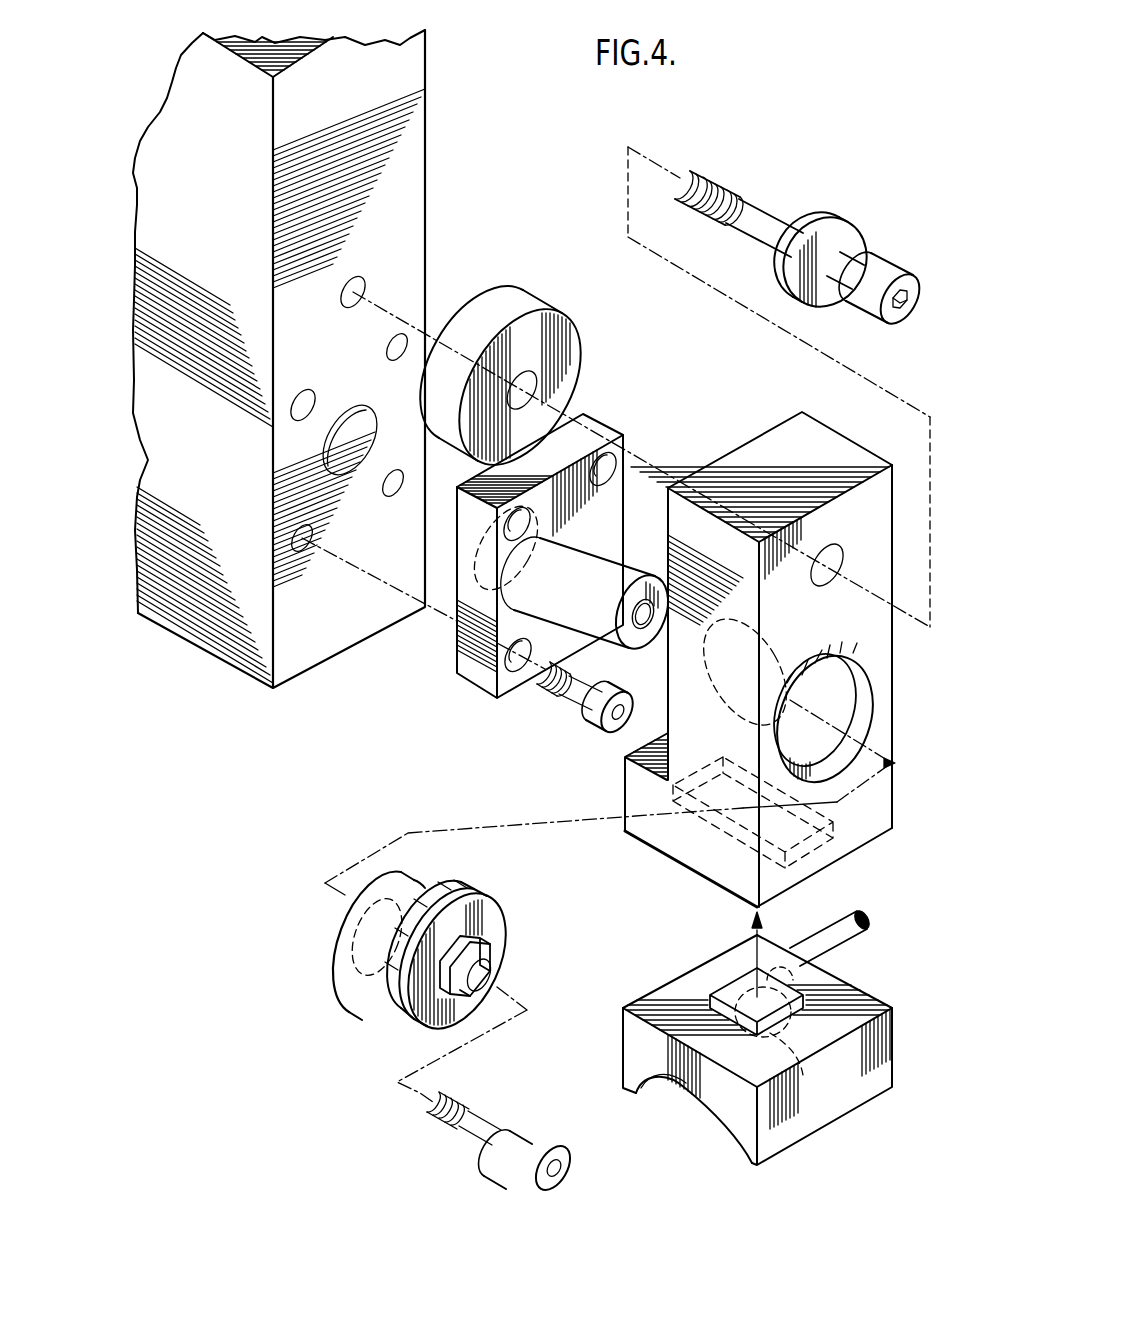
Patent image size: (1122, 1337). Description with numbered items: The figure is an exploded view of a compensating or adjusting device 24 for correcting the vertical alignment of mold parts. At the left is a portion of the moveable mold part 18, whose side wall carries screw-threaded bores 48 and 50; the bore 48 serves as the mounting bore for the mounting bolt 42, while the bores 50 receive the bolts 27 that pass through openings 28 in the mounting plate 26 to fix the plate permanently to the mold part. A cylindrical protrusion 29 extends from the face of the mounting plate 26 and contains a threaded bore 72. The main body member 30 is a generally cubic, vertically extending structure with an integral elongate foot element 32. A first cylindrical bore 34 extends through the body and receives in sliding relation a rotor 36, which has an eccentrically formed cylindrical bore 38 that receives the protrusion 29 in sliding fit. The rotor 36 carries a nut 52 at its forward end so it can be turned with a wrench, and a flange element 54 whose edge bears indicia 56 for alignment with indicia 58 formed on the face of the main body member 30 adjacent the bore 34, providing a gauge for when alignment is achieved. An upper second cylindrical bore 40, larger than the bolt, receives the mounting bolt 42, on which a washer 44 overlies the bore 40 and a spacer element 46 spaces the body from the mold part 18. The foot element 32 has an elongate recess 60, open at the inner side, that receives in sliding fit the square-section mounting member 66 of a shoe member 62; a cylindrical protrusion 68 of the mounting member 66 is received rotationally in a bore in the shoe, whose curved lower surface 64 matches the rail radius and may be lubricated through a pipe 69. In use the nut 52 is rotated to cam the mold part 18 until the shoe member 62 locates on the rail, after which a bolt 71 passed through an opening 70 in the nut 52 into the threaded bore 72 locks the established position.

The moveable mold part 18 is at (420, 134).
The compensating device 24 is at (765, 153).
The mounting plate 26 is at (477, 673).
The bolt 27 is at (580, 708).
The opening 28 is at (517, 637).
The cylindrical protrusion 29 is at (625, 568).
The main body member 30 is at (762, 452).
The foot element 32 is at (636, 797).
The first cylindrical bore 34 is at (873, 700).
The rotor 36 is at (421, 882).
The eccentric cylindrical bore 38 is at (336, 962).
The second cylindrical bore 40 is at (838, 556).
The mounting bolt 42 is at (777, 226).
The washer 44 is at (850, 242).
The spacer element 46 is at (515, 303).
The screw-threaded bore 48 is at (365, 277).
The screw-threaded bore 50 is at (305, 393).
The nut 52 is at (496, 957).
The flange element 54 is at (490, 927).
The indicia 56 is at (466, 890).
The indicia 58 is at (857, 652).
The elongate recess 60 is at (857, 849).
The shoe member 62 is at (905, 996).
The curved lower surface 64 is at (688, 1090).
The mounting member 66 is at (727, 985).
The cylindrical protrusion 68 is at (803, 1075).
The pipe 69 is at (866, 922).
The opening 70 is at (480, 977).
The bolt 71 is at (525, 1140).
The threaded bore 72 is at (641, 630).